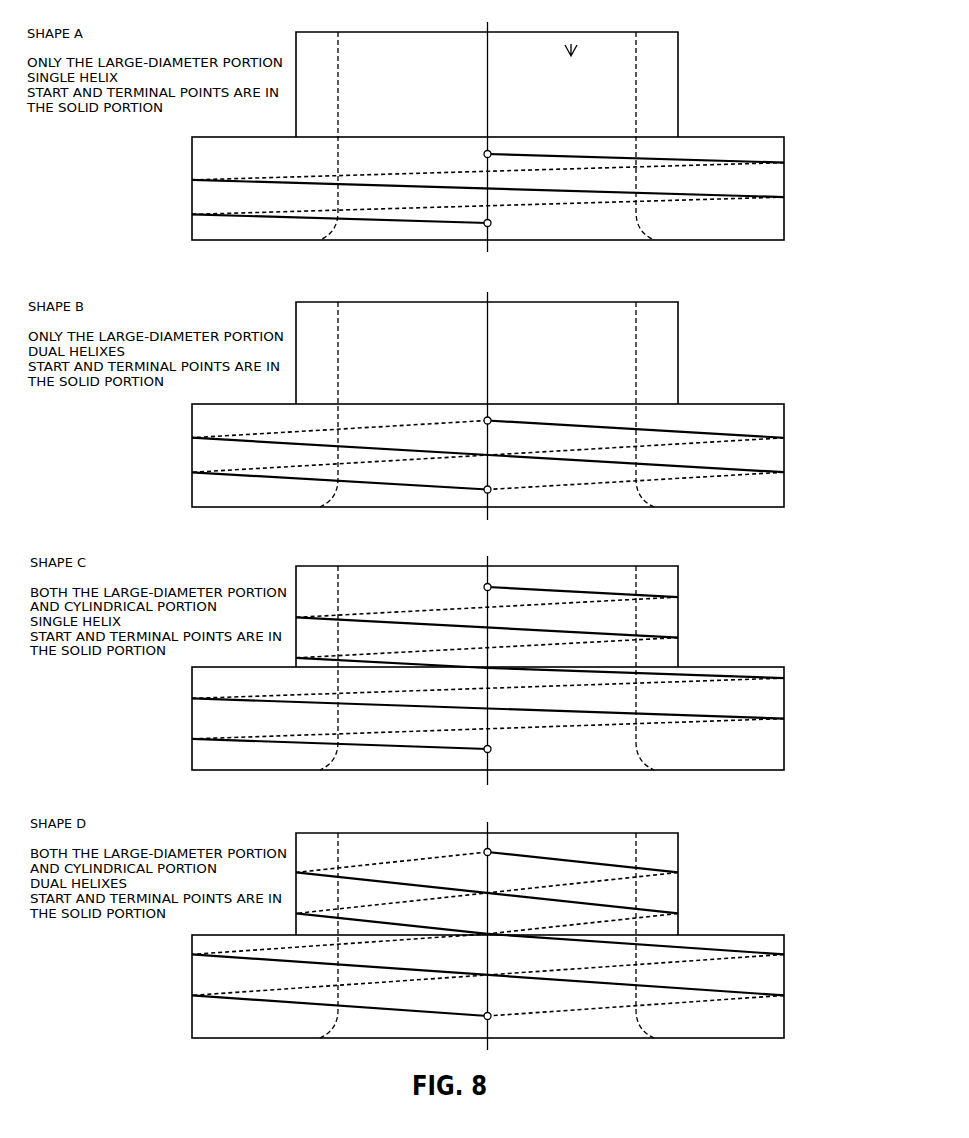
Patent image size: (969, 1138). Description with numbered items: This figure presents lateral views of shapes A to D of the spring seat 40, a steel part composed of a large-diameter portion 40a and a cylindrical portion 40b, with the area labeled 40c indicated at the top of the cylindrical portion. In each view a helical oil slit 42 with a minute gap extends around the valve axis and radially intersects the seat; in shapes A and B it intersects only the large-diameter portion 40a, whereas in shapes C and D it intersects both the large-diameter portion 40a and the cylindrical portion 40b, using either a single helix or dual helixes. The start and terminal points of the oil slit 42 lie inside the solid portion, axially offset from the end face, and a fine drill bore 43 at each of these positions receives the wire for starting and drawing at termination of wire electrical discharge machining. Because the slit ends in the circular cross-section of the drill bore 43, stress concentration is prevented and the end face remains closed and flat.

The spring seat 40 is at (489, 134).
The large-diameter portion 40a is at (741, 137).
The cylindrical portion 40b is at (678, 76).
The end face / center axis of cylindrical portion 40c is at (571, 31).
The oil slit 42 is at (571, 193).
The drill bore 43 is at (491, 152).